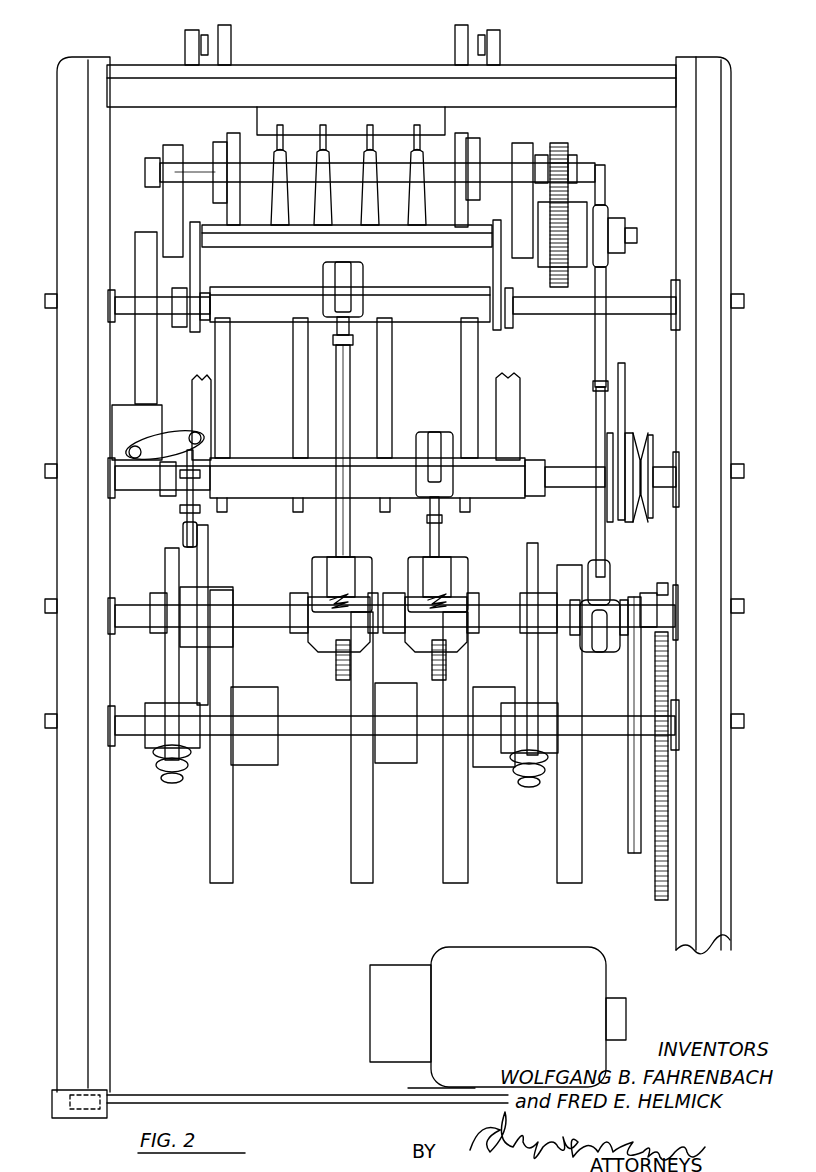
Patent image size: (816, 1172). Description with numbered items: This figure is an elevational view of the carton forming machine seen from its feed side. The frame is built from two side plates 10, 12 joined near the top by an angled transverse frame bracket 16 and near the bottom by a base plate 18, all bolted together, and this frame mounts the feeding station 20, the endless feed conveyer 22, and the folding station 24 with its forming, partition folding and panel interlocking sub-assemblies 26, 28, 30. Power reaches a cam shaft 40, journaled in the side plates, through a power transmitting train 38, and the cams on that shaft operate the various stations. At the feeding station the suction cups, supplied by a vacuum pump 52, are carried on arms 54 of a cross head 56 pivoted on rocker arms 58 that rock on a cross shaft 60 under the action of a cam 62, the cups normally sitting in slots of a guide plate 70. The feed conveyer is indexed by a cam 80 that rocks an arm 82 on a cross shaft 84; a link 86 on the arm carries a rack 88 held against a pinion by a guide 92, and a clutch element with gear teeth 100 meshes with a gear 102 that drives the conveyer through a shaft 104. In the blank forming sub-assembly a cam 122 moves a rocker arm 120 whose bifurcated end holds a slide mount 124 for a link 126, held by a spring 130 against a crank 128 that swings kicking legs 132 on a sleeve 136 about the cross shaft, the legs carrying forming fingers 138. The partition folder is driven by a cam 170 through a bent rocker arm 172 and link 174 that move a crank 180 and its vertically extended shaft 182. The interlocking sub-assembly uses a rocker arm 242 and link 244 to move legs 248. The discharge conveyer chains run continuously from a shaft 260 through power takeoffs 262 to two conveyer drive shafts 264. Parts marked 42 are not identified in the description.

The side plate 10 is at (60, 206).
The side plate 12 is at (717, 219).
The angled transverse frame bracket 16 is at (572, 70).
The base plate 18 is at (248, 1092).
The feeding station 20 is at (348, 62).
The endless feed conveyer 22 is at (552, 872).
The folding station 24 is at (445, 818).
The blank forming sub-assembly 26 is at (349, 876).
The partition folding sub-assembly 28 is at (204, 874).
The panel interlocking sub-assembly 30 is at (442, 876).
The power transmitting train 38 is at (646, 864).
The cam shaft 40 is at (302, 740).
The hanger brackets 42 is at (205, 32).
The vacuum pump 52 is at (534, 958).
The arms 54 is at (358, 218).
The cross head 56 is at (263, 240).
The rocker arms 58 is at (192, 270).
The cross shaft 60 is at (516, 313).
The cam 62 is at (481, 180).
The guide plate 70 is at (430, 122).
The cam 80 is at (560, 816).
The arm 82 is at (613, 651).
The cross shaft 84 is at (258, 608).
The link 86 is at (596, 533).
The rack 88 is at (596, 347).
The guide 92 is at (600, 215).
The gear teeth 100 is at (560, 278).
The gear 102 is at (560, 152).
The shaft 104 is at (490, 165).
The rocker arm 120 is at (338, 635).
The cam 122 is at (353, 818).
The slide mount 124 is at (344, 577).
The link 126 is at (336, 538).
The crank 128 is at (332, 268).
The spring 130 is at (356, 596).
The kicking legs 132 is at (390, 372).
The sleeve 136 is at (272, 325).
The kicker feet or forming fingers 138 is at (296, 506).
The cam 170 is at (214, 818).
The bent rocker arm 172 is at (200, 558).
The link 174 is at (195, 490).
The crank 180 is at (168, 427).
The vertically extended shaft 182 is at (150, 348).
The rocker arm 242 is at (434, 637).
The link 244 is at (418, 444).
The legs 248 is at (205, 414).
The shaft 260 is at (420, 756).
The power takeoffs 262 is at (164, 788).
The conveyer drive shafts 264 is at (168, 660).